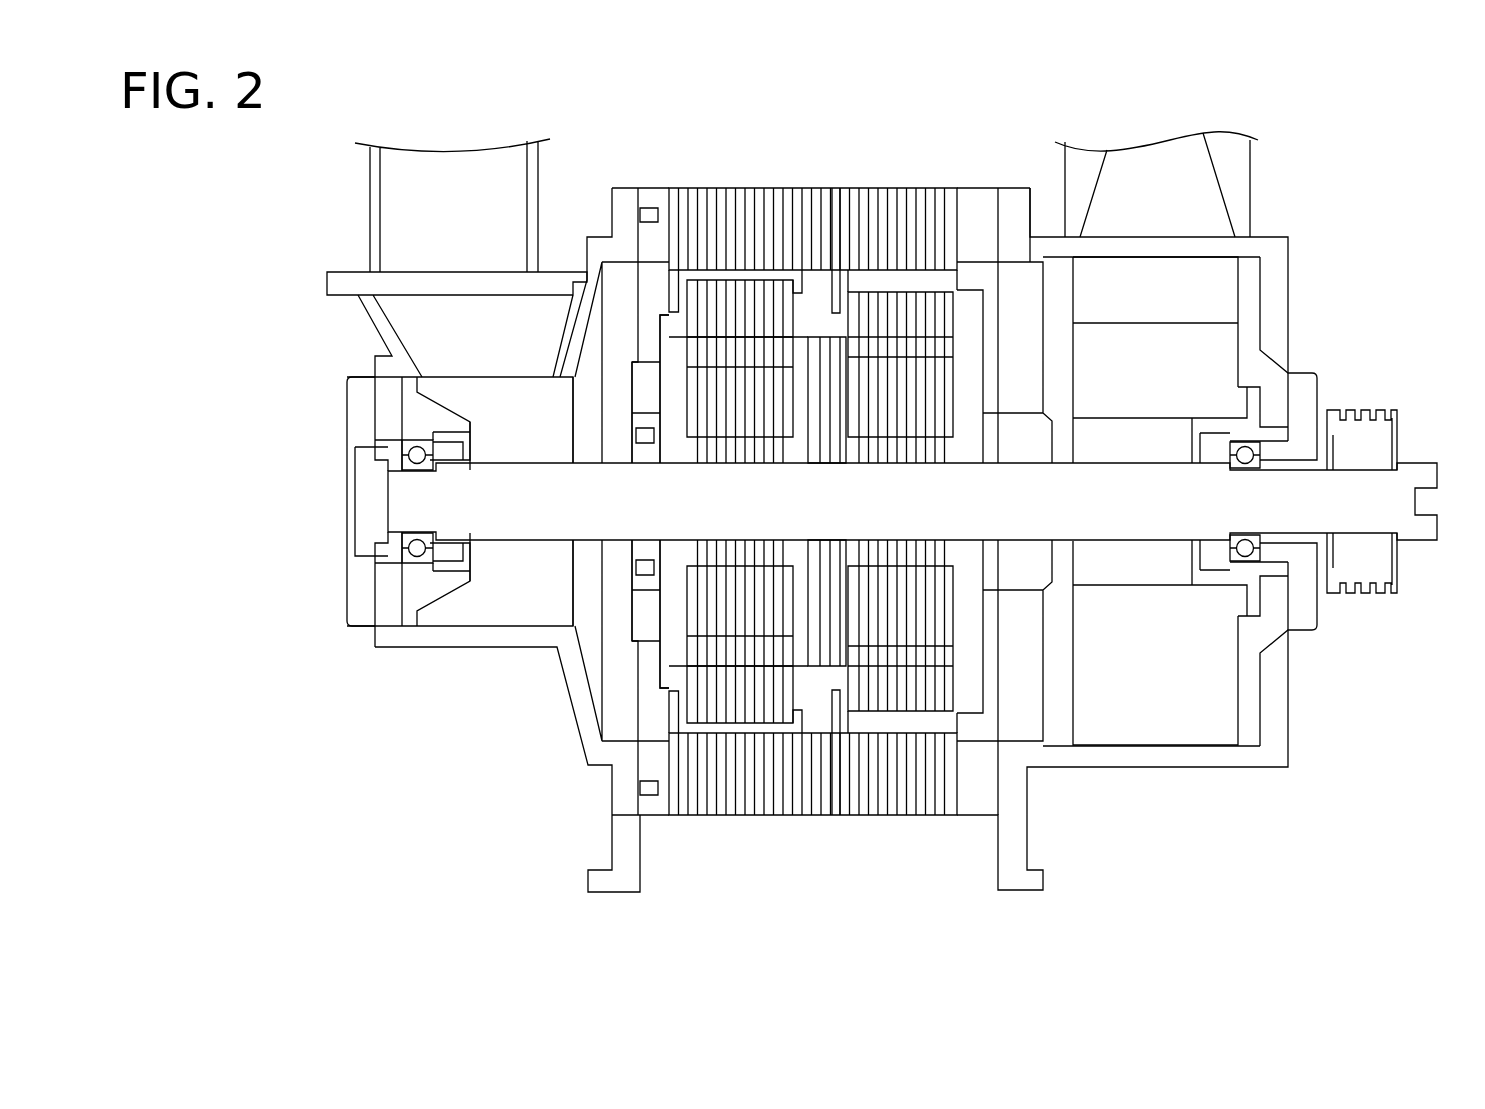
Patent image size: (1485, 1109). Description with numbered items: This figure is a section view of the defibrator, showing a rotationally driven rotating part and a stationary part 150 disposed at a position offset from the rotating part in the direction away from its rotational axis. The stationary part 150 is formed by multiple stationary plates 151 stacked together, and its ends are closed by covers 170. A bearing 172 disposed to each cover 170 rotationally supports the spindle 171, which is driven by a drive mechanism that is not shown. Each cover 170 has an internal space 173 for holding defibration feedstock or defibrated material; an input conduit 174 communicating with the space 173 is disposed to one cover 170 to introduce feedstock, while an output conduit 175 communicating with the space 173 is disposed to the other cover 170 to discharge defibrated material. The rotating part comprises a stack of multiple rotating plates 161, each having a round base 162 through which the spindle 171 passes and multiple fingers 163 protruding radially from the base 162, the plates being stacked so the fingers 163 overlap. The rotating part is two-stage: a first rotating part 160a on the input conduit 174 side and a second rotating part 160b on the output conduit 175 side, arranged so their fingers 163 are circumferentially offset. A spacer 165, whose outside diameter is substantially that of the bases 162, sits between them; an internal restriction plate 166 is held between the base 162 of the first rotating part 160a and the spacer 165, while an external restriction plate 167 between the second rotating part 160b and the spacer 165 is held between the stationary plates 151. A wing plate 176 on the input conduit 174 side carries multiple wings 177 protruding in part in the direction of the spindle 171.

The stationary part 150 is at (966, 188).
The stationary plates 151 is at (840, 187).
The first rotating part 160a is at (751, 460).
The second rotating part 160b is at (879, 460).
The rotating plates 161 is at (706, 447).
The base 162 is at (913, 350).
The fingers 163 is at (745, 288).
The spacer 165 is at (828, 447).
The internal restriction plate 166 is at (800, 293).
The external restriction plate 167 is at (670, 293).
The covers 170 is at (597, 253).
The spindle 171 is at (432, 500).
The bearing 172 is at (398, 550).
The internal space 173 is at (1200, 297).
The input conduit 174 is at (457, 162).
The output conduit 175 is at (1168, 162).
The wing plate 176 is at (660, 690).
The wings 177 is at (632, 658).